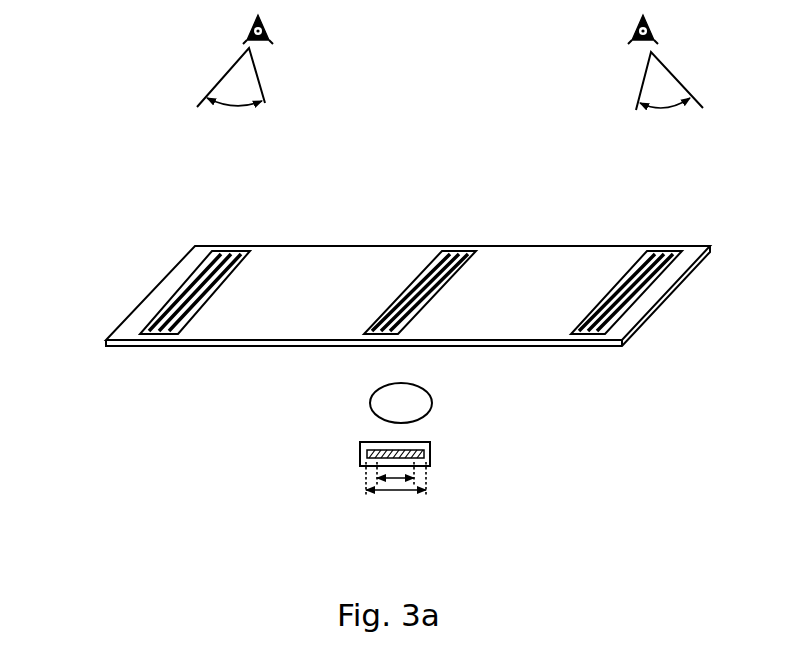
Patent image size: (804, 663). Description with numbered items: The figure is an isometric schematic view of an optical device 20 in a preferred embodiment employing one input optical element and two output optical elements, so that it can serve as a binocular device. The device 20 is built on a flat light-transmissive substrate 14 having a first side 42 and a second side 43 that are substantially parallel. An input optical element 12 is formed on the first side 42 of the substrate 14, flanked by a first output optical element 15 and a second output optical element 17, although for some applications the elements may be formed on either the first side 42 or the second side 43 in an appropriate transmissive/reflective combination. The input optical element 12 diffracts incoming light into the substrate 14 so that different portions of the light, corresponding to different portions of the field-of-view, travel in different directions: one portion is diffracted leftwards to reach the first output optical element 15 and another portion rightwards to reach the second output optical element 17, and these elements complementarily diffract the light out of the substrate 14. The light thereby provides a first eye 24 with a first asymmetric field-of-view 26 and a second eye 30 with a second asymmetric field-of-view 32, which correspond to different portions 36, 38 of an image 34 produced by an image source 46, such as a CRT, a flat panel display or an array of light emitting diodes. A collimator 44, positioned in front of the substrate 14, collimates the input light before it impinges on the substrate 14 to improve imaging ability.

The device 20 is at (126, 182).
The first eye 24 is at (270, 24).
The first asymmetric field-of-view 26 is at (231, 77).
The second eye 30 is at (655, 24).
The second asymmetric field-of-view 32 is at (669, 81).
The light-transmissive substrate 14 is at (668, 293).
The first side of substrate 42 is at (528, 253).
The second side of substrate 43 is at (575, 352).
The first output optical element 15 is at (228, 252).
The input optical element 12 is at (457, 252).
The second output optical element 17 is at (657, 262).
The collimator 44 is at (417, 407).
The image 34 is at (370, 445).
The image source 46 is at (432, 447).
The portion of image 36 is at (377, 483).
The portion of image 38 is at (415, 490).